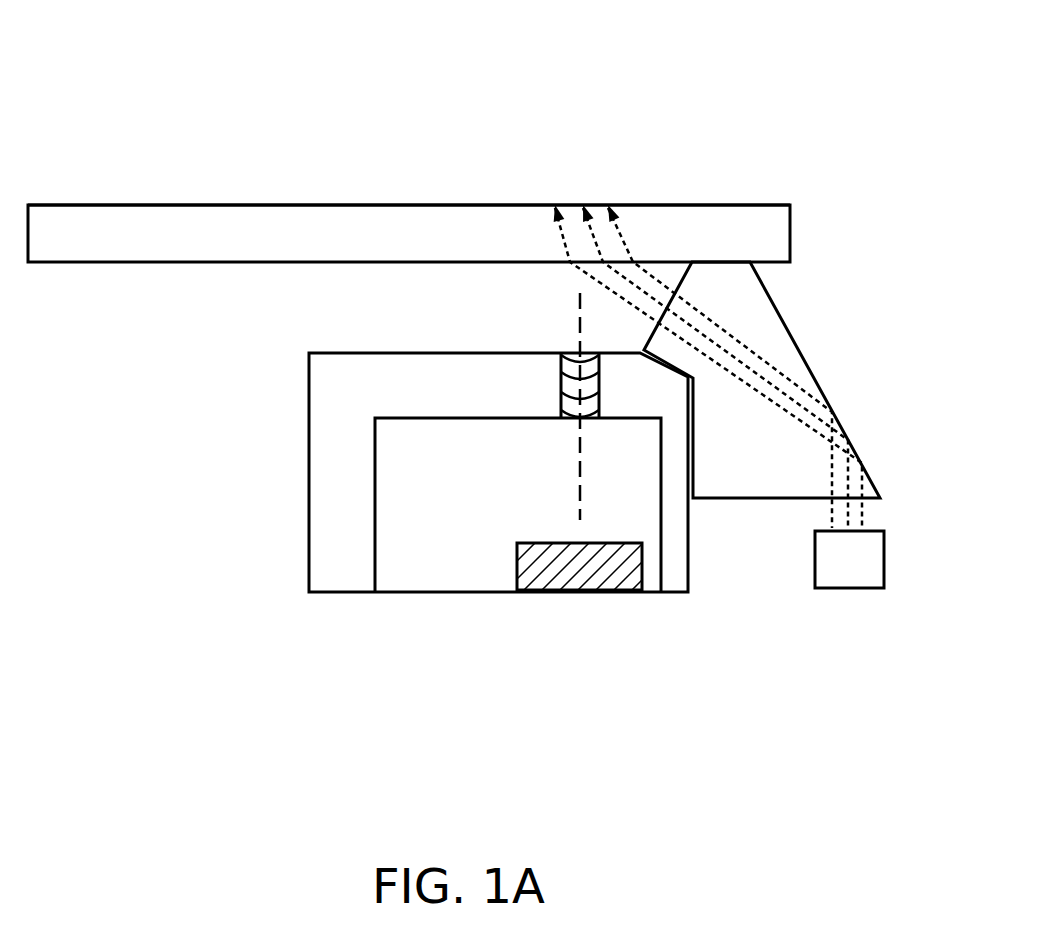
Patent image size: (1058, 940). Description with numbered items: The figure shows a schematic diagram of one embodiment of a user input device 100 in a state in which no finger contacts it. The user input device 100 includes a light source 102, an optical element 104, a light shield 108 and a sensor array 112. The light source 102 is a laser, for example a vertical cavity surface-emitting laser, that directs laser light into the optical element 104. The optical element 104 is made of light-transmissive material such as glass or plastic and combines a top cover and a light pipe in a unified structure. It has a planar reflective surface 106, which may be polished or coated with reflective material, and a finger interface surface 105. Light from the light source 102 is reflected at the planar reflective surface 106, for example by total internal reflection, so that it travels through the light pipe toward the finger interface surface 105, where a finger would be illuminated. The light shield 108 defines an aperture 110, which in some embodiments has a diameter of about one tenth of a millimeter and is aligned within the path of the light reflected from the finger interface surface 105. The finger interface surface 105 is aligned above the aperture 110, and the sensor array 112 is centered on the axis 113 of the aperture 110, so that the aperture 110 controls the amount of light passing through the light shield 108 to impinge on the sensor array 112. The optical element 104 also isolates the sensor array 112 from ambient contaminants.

The user input device 100 is at (250, 55).
The light source 102 is at (848, 588).
The optical element 104 is at (790, 233).
The finger interface surface 105 is at (675, 195).
The planar reflective surface 106 is at (830, 377).
The light shield 108 is at (309, 467).
The aperture 110 is at (558, 335).
The sensor array 112 is at (517, 566).
The axis 113 is at (578, 483).